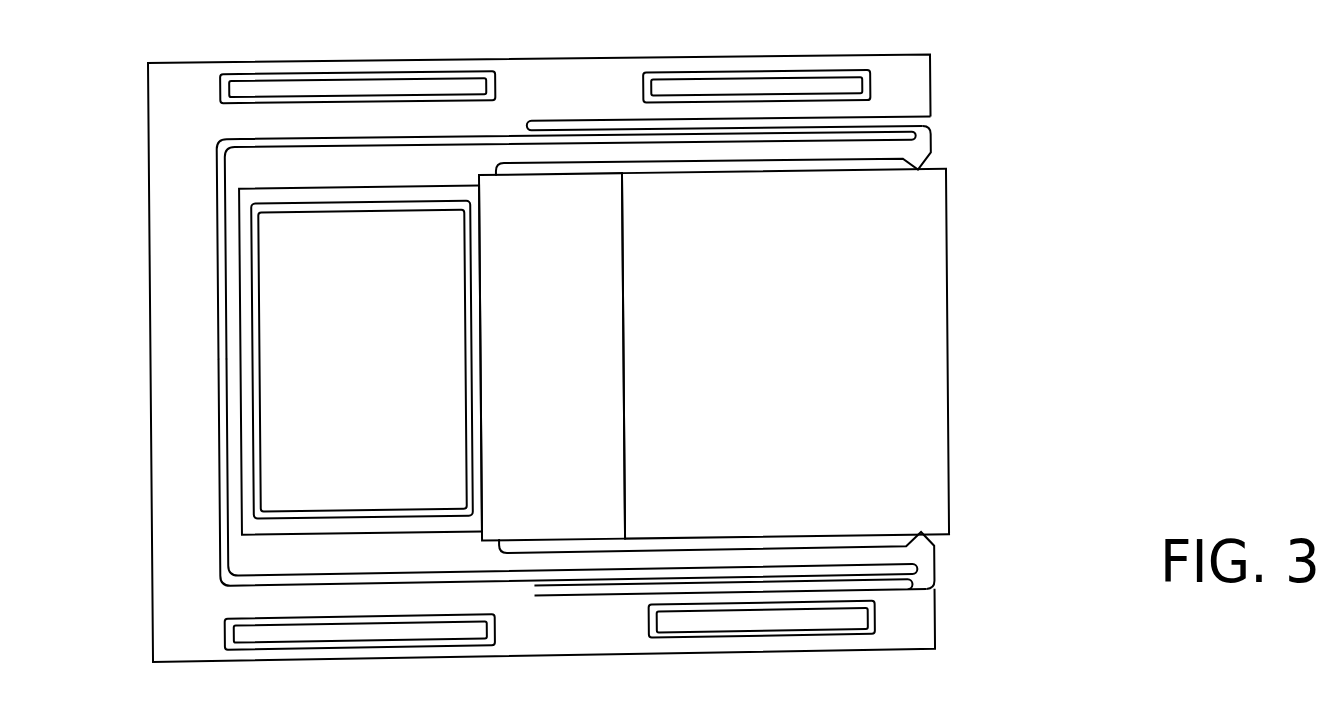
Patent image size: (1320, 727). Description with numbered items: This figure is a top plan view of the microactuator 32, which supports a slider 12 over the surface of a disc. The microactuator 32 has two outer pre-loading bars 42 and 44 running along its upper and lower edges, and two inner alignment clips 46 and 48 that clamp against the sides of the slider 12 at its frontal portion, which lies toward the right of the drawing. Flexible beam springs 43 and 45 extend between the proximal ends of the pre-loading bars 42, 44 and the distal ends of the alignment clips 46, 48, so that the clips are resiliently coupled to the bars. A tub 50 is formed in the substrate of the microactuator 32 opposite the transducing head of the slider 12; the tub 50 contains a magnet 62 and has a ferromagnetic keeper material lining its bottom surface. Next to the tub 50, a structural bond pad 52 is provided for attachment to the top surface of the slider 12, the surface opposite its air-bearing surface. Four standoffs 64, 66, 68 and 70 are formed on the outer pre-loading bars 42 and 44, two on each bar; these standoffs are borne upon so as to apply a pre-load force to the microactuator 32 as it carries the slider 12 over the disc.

The slider 12 is at (935, 331).
The microactuator 32 is at (112, 325).
The outer pre-loading bar 42 is at (918, 74).
The flexible beam spring 43 is at (876, 128).
The outer pre-loading bar 44 is at (923, 633).
The flexible beam spring 45 is at (940, 600).
The inner alignment clip 46 is at (918, 142).
The inner alignment clip 48 is at (920, 558).
The tub 50 is at (243, 205).
The structural bond pad 52 is at (567, 406).
The magnet 62 is at (379, 372).
The standoff 64 is at (293, 87).
The standoff 66 is at (744, 88).
The standoff 68 is at (311, 634).
The standoff 70 is at (828, 620).